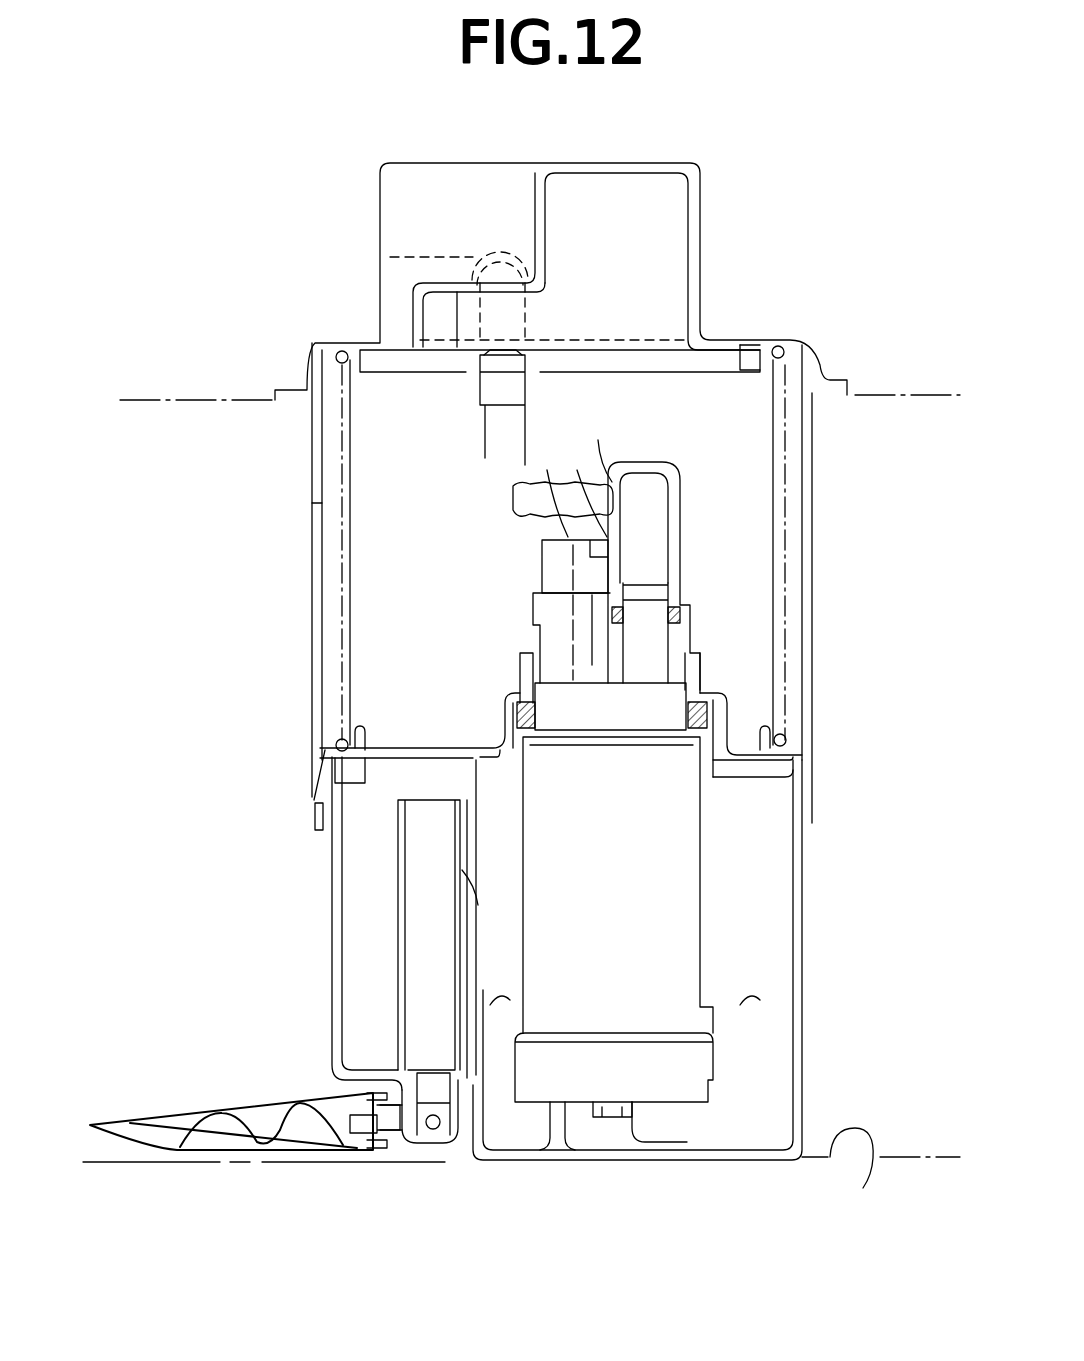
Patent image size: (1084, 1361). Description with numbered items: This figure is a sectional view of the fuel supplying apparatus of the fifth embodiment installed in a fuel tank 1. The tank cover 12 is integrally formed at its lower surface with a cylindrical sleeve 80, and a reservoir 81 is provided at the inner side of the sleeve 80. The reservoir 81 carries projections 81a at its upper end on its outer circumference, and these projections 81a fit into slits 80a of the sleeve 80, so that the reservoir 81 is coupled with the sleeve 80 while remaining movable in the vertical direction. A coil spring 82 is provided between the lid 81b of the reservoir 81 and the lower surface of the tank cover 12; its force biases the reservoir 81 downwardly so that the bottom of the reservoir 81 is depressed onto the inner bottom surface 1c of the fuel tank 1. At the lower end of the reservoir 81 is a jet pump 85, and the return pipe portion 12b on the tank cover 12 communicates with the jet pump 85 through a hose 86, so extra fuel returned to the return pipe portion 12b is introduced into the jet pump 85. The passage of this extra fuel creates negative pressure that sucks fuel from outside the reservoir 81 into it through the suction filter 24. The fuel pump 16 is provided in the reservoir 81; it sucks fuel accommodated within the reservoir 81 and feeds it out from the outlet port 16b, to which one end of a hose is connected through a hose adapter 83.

The fuel tank 1 is at (172, 395).
The inner bottom surface 1c is at (860, 1198).
The tank cover 12 is at (830, 378).
The return pipe portion 12b is at (390, 257).
The fuel pump 16 is at (663, 915).
The outlet port 16b is at (655, 640).
The suction filter 24 is at (210, 1100).
The cylindrical sleeve 80 is at (312, 470).
The slits 80a is at (312, 560).
The reservoir 81 is at (342, 945).
The projections 81a is at (315, 800).
The lid 81b is at (400, 745).
The coil spring 82 is at (785, 545).
The hose adapter 83 is at (678, 485).
The jet pump 85 is at (400, 1145).
The hose 86 is at (492, 447).